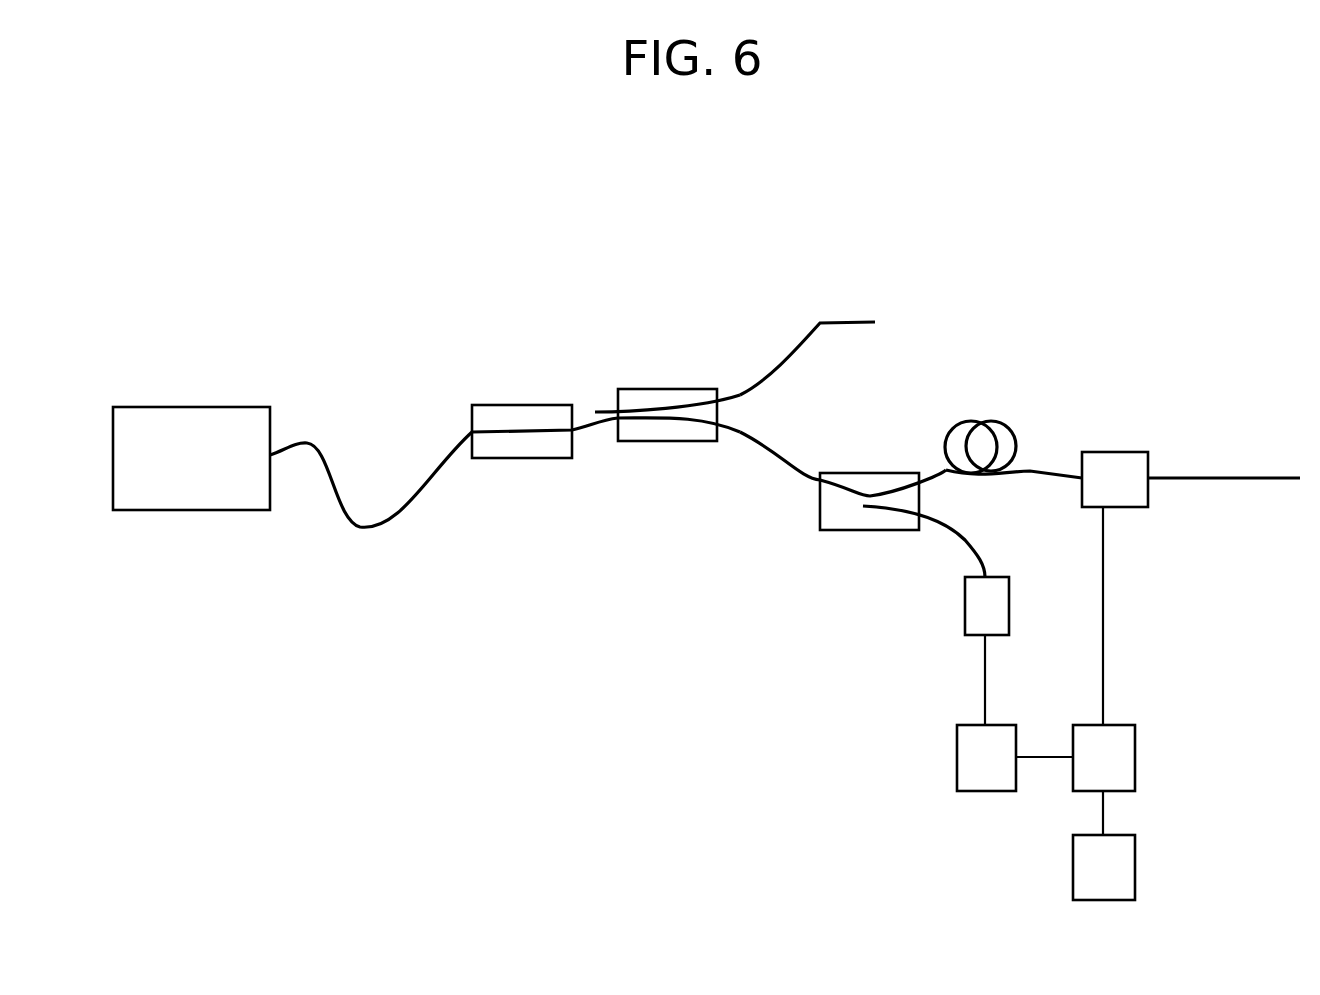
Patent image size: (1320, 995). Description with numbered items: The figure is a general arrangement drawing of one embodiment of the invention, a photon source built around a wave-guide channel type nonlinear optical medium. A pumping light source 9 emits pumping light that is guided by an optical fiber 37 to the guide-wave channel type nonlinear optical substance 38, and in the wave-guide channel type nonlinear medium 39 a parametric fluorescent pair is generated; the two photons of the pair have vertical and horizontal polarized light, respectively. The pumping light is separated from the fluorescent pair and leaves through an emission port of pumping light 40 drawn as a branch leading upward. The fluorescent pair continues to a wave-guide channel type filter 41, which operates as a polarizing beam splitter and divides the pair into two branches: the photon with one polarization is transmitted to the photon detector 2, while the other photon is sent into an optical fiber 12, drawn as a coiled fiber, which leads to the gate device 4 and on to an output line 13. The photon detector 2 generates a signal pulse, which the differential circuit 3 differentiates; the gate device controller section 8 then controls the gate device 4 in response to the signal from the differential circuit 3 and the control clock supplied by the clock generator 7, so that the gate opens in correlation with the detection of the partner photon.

The pumping light source 9 is at (197, 436).
The optical fiber 37 is at (312, 443).
The guide-wave channel type nonlinear optical substance 38 is at (512, 415).
The wave-guide channel type nonlinear medium 39 is at (663, 433).
The emission port of pumping light 40 is at (840, 318).
The wave-guide channel type filter 41 is at (862, 488).
The optical fiber 12 is at (1040, 472).
The gate device 4 is at (1120, 462).
The output optical fiber 13 is at (1227, 477).
The photon detector 2 is at (985, 605).
The differential circuit 3 is at (975, 757).
The gate device controller section 8 is at (1117, 760).
The clock generator 7 is at (1117, 872).